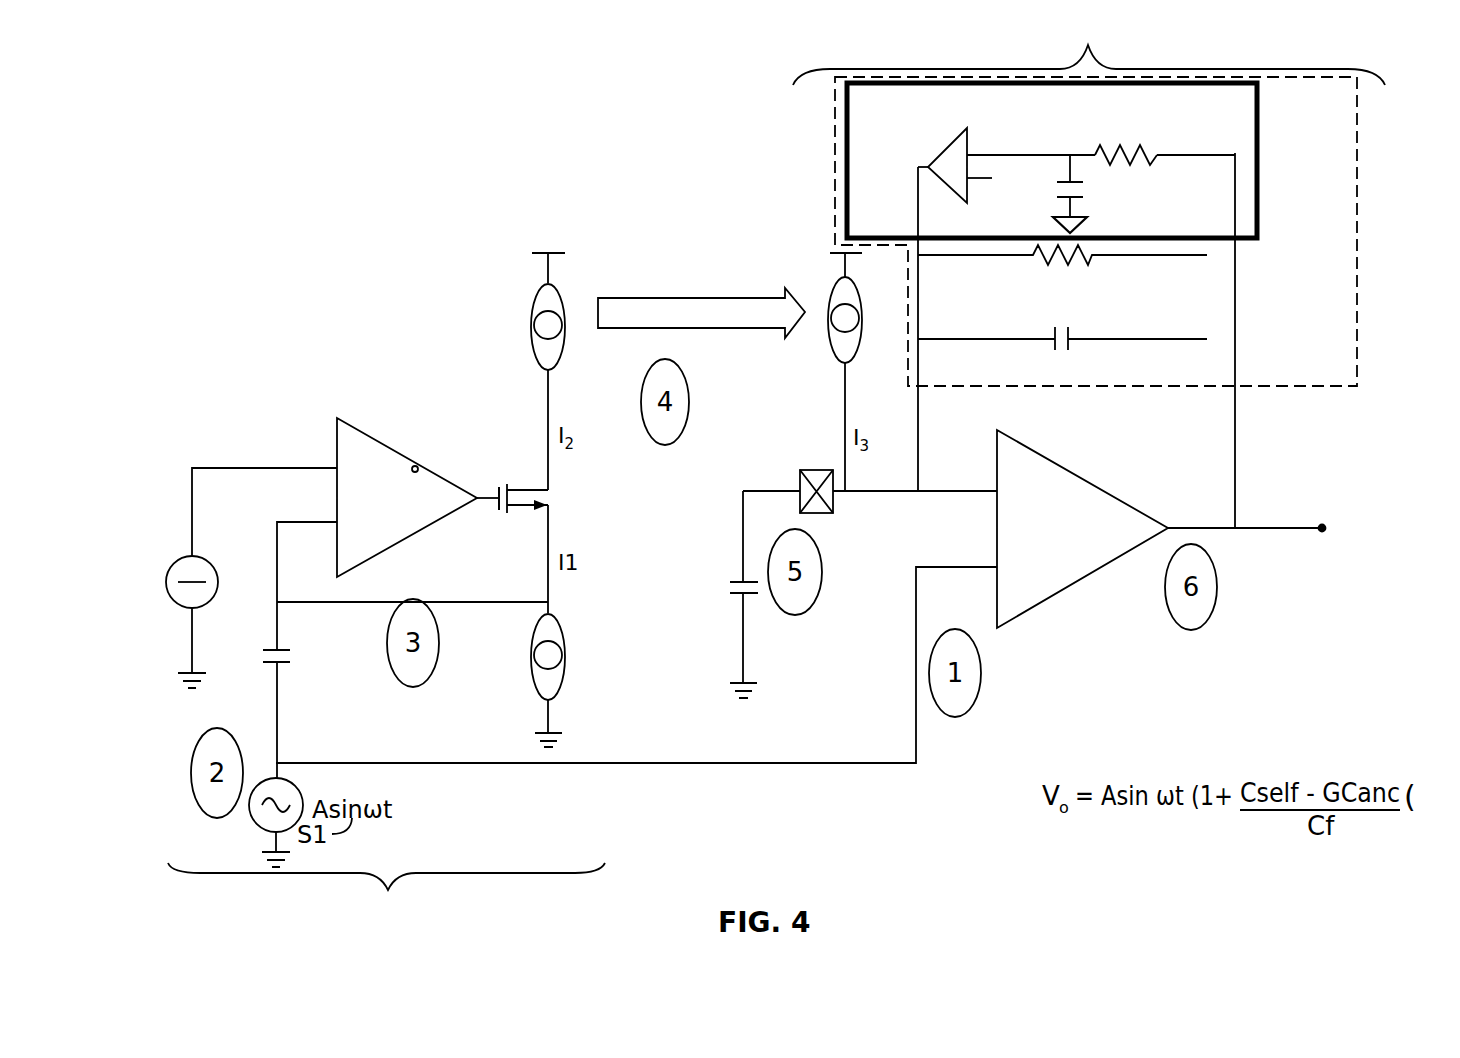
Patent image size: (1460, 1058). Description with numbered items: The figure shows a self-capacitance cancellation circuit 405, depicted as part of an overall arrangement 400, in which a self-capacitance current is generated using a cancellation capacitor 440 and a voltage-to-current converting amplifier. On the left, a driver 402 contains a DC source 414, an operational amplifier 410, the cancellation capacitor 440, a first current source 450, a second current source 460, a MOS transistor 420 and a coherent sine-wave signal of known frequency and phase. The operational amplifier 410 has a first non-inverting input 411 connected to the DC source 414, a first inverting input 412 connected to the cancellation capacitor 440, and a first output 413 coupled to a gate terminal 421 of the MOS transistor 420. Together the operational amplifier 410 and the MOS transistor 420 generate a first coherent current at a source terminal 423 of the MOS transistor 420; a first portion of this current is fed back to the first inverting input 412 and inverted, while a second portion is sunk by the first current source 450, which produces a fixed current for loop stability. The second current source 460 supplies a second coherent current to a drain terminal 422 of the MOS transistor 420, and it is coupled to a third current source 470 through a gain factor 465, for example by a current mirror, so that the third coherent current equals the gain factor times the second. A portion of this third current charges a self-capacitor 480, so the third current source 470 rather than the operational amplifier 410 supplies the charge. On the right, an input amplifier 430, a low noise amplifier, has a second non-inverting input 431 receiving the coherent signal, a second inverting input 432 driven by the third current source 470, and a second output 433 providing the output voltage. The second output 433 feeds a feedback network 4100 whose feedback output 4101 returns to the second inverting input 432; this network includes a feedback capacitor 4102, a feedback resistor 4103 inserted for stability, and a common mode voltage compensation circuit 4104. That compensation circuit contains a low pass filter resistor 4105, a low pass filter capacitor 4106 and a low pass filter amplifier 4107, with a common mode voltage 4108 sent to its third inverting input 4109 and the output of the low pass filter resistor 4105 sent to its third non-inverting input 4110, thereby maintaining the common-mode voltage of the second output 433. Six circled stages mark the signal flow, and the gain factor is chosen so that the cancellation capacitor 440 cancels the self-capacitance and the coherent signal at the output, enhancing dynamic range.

The capacitance sensing circuit 400 is at (240, 82).
The driver 402 is at (386, 894).
The self-capacitance cancellation circuit 405 is at (1089, 53).
The operational amplifier 410 is at (407, 497).
The first non-inverting input 411 is at (298, 468).
The first inverting input 412 is at (298, 522).
The first output 413 is at (418, 466).
The DC source 414 is at (166, 586).
The MOS transistor 420 is at (497, 480).
The gate terminal 421 is at (485, 514).
The drain terminal 422 is at (504, 486).
The source terminal 423 is at (523, 510).
The input amplifier 430 is at (1086, 477).
The second non-inverting input 431 is at (947, 567).
The second inverting input 432 is at (962, 491).
The second output 433 is at (1277, 528).
The cancellation capacitor Ccanc 440 is at (330, 688).
The first current source 450 is at (565, 645).
The second current source 460 is at (532, 300).
The gain factor G 465 is at (696, 298).
The third current source 470 is at (830, 282).
The self-capacitor 480 is at (768, 555).
The feedback network 4100 is at (1357, 228).
The feedback output 4101 is at (918, 376).
The feedback capacitor Cf 4102 is at (1080, 376).
The feedback resistor Rf 4103 is at (1078, 291).
The common mode voltage compensation circuit 4104 is at (1257, 160).
The low pass filter resistor Rfilt 4105 is at (1125, 115).
The low pass filter capacitor Cfilt 4106 is at (1140, 190).
The low pass filter amplifier 4107 is at (947, 148).
The common mode voltage Vcm 4108 is at (1020, 167).
The third inverting input 4109 is at (993, 179).
The third non-inverting input 4110 is at (998, 155).